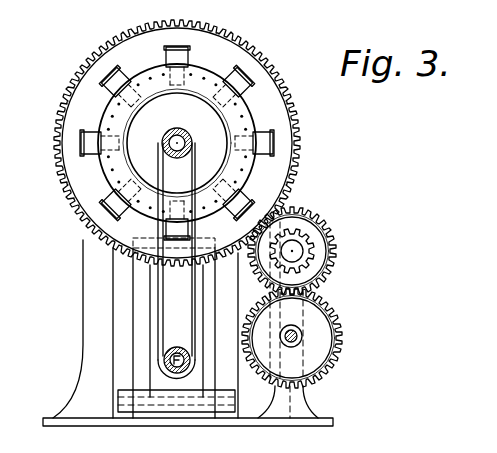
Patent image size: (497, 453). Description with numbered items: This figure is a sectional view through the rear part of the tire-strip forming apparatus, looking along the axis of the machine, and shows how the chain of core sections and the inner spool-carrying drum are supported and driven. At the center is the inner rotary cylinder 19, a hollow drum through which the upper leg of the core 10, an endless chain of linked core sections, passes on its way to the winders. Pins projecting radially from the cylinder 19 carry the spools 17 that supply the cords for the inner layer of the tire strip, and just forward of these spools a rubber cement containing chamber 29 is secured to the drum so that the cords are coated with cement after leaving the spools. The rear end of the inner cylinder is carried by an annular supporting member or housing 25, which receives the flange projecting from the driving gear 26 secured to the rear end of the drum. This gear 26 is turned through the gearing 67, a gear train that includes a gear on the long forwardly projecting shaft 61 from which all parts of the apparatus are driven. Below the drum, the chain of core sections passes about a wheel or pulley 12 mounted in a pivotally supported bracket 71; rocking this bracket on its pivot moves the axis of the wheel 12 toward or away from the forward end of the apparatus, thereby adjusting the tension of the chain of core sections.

The core 10 is at (193, 123).
The wheel or pulley 12 is at (161, 166).
The spools 17 is at (187, 47).
The inner rotary cylinder 19 is at (226, 131).
The annular supporting member or housing 25 is at (292, 101).
The driving gear 26 is at (73, 82).
The rubber cement containing chamber 29 is at (251, 118).
The long forwardly projecting shaft 61 is at (298, 323).
The gearing 67 is at (338, 343).
The pivotally supported bracket 71 is at (136, 300).